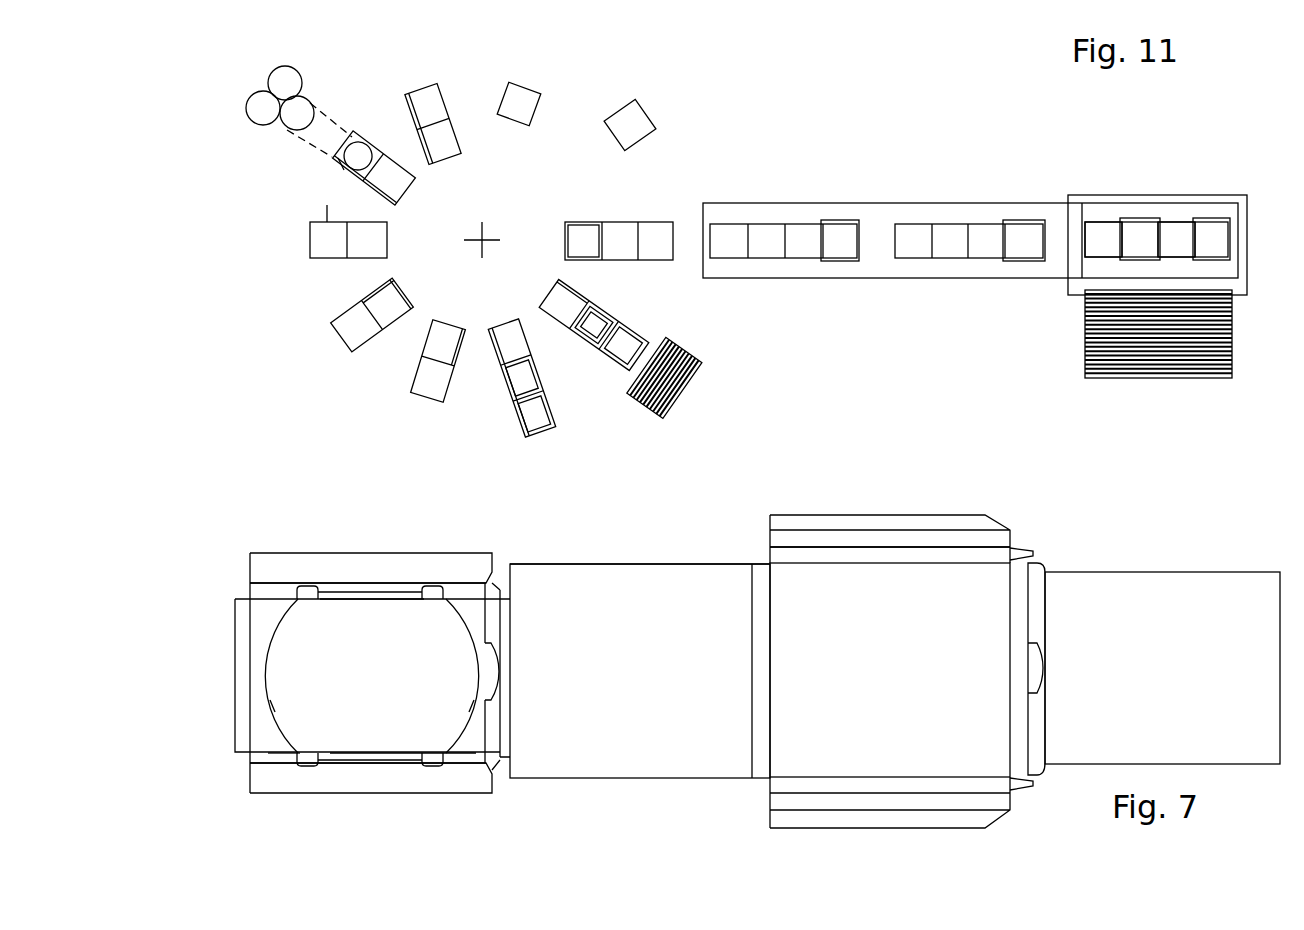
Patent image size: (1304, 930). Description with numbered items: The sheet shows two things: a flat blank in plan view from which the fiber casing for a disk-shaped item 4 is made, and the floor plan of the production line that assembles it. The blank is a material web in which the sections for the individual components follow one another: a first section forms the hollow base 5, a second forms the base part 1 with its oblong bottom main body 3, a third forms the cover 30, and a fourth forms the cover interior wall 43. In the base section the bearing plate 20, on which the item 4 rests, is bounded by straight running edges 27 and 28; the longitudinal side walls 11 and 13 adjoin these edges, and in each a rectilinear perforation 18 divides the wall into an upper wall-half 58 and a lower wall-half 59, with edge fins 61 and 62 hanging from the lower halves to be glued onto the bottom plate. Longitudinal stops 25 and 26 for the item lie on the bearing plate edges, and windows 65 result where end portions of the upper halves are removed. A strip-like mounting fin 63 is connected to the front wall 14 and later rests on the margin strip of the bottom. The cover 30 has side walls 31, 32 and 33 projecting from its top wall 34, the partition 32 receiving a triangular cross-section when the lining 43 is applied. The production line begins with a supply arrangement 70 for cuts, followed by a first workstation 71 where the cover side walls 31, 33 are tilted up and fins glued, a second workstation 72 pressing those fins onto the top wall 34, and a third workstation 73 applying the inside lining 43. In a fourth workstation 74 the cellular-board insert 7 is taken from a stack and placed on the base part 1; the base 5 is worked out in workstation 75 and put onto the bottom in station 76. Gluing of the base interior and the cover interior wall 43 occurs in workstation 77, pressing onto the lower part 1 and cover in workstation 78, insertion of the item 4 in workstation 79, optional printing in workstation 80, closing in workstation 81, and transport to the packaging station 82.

In FIG. 11, the base part 1 is at (1183, 235).
In FIG. 7, the base part 1 is at (620, 556).
In FIG. 7, the bottom main body 3 is at (598, 667).
In FIG. 11, the disk-shaped item 4 is at (357, 152).
In FIG. 11, the base 5 is at (1215, 245).
In FIG. 7, the base 5 is at (270, 530).
In FIG. 11, the insert 7 is at (593, 332).
In FIG. 7, the longitudinal side wall 11 is at (250, 590).
In FIG. 7, the longitudinal side wall 13 is at (252, 760).
In FIG. 7, the front wall 14 is at (493, 720).
In FIG. 7, the perforation 18 is at (372, 597).
In FIG. 7, the bearing plate 20 is at (355, 663).
In FIG. 7, the longitudinal stop 25 is at (445, 760).
In FIG. 7, the longitudinal stop 26 is at (298, 762).
In FIG. 7, the straight edge 27 is at (367, 600).
In FIG. 7, the straight edge 28 is at (437, 715).
In FIG. 11, the cover 30 is at (1133, 233).
In FIG. 7, the cover 30 is at (830, 500).
In FIG. 7, the cover side wall 31 is at (907, 512).
In FIG. 7, the partition 32 is at (1039, 564).
In FIG. 7, the cover side wall 33 is at (890, 831).
In FIG. 7, the top wall 34 is at (835, 663).
In FIG. 11, the cover interior wall 43 is at (1103, 240).
In FIG. 7, the cover interior wall 43 is at (1113, 663).
In FIG. 7, the upper wall-half 58 is at (299, 715).
In FIG. 7, the lower wall-half 59 is at (405, 765).
In FIG. 7, the edge fin 61 is at (258, 560).
In FIG. 7, the edge fin 62 is at (295, 780).
In FIG. 7, the mounting fin 63 is at (504, 598).
In FIG. 7, the window 65 is at (308, 588).
In FIG. 11, the supply arrangement 70 is at (1233, 194).
In FIG. 11, the first workstation 71 is at (957, 204).
In FIG. 11, the second workstation 72 is at (778, 204).
In FIG. 11, the third workstation 73 is at (648, 221).
In FIG. 11, the fourth workstation 74 is at (640, 333).
In FIG. 11, the workstation 75 is at (486, 361).
In FIG. 11, the workstation 76 is at (414, 375).
In FIG. 11, the workstation 77 is at (345, 310).
In FIG. 11, the workstation 78 is at (325, 222).
In FIG. 11, the workstation 79 is at (338, 163).
In FIG. 11, the workstation 80 is at (445, 97).
In FIG. 11, the workstation 81 is at (541, 99).
In FIG. 11, the packaging station 82 is at (620, 105).